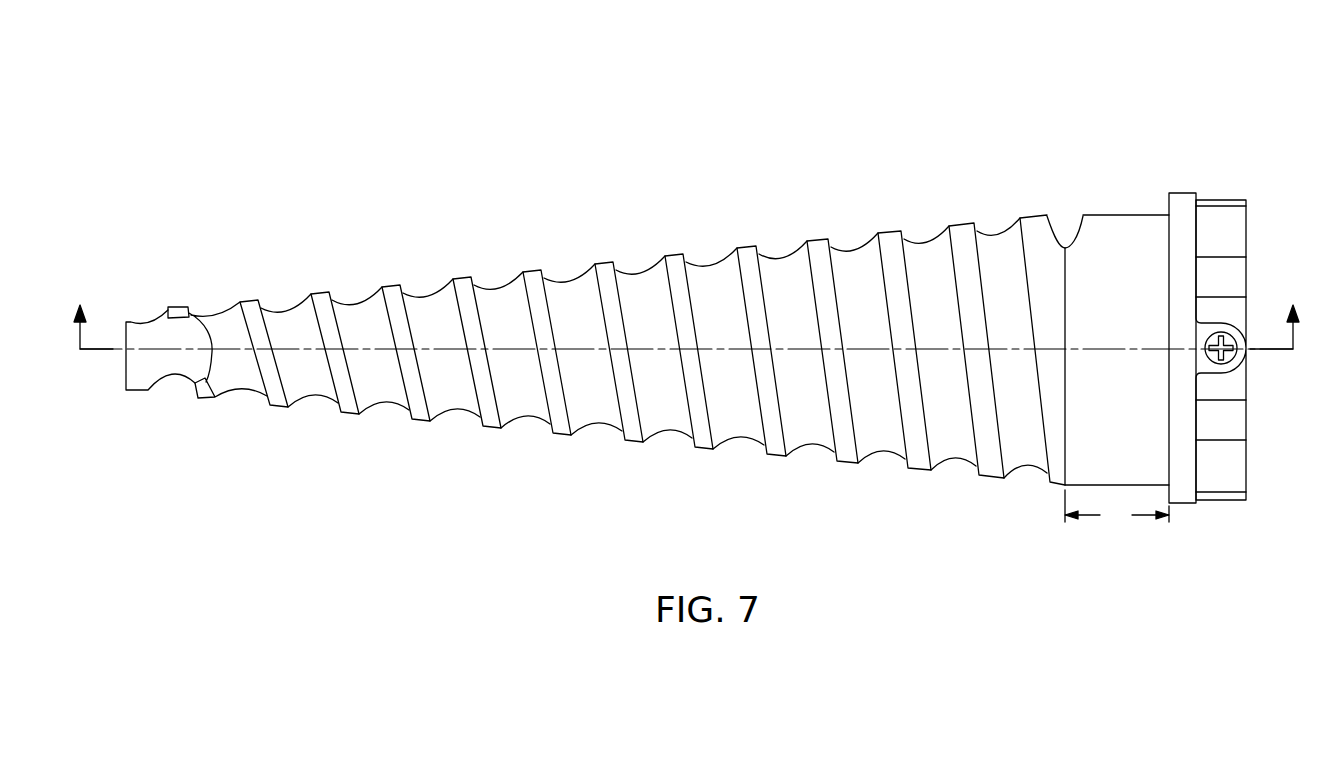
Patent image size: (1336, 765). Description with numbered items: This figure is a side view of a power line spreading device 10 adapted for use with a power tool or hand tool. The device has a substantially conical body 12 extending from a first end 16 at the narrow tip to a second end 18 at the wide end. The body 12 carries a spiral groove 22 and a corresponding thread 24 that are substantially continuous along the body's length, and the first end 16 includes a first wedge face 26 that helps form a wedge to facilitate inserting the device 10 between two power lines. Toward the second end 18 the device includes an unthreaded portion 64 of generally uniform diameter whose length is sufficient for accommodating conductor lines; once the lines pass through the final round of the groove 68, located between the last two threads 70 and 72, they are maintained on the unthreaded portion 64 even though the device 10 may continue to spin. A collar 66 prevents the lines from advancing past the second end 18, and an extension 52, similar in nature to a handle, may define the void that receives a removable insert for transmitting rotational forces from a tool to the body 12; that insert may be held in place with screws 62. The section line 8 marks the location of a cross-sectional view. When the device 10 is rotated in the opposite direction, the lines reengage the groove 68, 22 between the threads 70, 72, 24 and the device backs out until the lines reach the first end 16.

The section line 8- 8 is at (685, 310).
The power line spreading device 10 is at (921, 108).
The substantially conical body 12 is at (621, 452).
The first end 16 is at (179, 305).
The second end 18 is at (1181, 505).
The spiral groove 22 is at (641, 268).
The thread 24 is at (604, 262).
The first wedge face 26 is at (138, 360).
The extension 52 is at (1231, 215).
The screws 62 is at (1232, 353).
The unthreaded portion 64 is at (1121, 215).
The collar 66 is at (1179, 194).
The groove 68 is at (997, 231).
The thread 70 is at (961, 223).
The thread 72 is at (1036, 215).